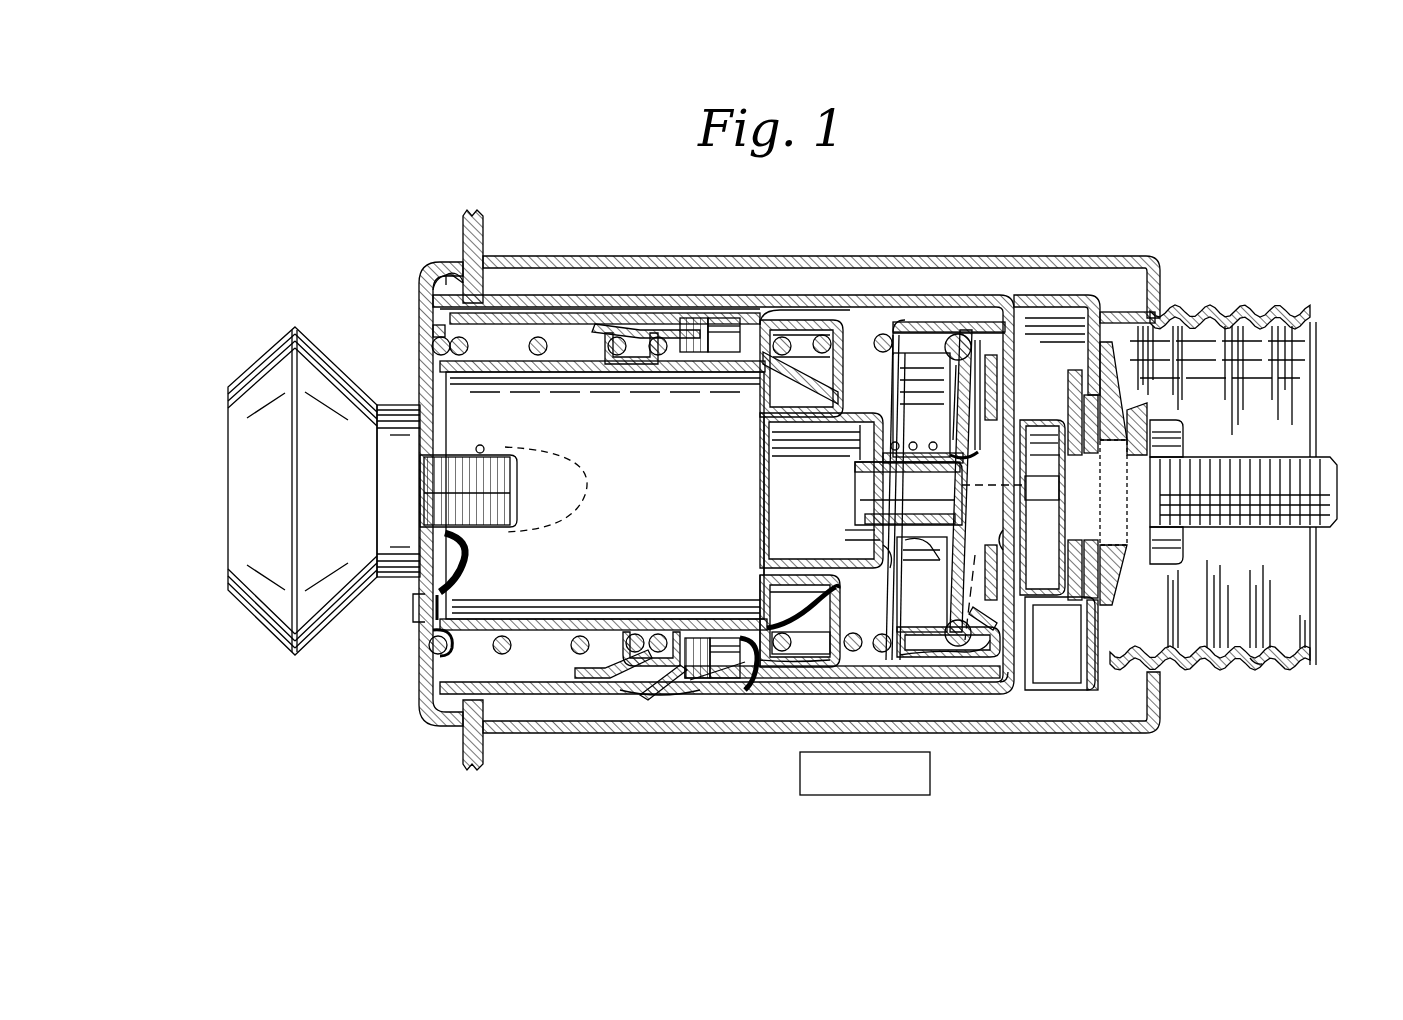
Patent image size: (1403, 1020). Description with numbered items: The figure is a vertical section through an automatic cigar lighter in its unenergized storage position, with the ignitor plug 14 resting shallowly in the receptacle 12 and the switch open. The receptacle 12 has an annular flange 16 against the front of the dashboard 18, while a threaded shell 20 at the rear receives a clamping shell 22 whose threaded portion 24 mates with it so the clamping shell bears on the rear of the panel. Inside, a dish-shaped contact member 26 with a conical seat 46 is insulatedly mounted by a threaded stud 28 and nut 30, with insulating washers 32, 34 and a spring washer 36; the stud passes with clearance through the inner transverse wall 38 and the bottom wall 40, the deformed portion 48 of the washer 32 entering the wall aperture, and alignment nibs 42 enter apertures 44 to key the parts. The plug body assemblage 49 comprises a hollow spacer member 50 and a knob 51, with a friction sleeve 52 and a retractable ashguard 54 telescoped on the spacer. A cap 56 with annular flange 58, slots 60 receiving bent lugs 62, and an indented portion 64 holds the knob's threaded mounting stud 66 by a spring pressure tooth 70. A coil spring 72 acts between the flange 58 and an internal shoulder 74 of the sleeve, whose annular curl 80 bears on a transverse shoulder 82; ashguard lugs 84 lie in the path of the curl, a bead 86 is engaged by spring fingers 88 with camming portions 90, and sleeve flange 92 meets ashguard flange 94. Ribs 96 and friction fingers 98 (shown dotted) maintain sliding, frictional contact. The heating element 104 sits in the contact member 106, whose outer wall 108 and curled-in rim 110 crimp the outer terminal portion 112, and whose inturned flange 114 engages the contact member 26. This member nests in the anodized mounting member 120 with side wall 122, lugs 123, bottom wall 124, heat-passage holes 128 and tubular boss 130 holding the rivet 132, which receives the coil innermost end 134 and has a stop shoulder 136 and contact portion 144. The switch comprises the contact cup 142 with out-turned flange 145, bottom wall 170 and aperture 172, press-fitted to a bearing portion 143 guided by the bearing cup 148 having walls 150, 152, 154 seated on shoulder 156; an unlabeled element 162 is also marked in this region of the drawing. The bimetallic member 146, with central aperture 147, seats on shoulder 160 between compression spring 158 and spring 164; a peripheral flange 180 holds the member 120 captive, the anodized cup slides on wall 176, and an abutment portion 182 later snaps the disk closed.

The receptacle 12 is at (660, 290).
The ignitor plug 14 is at (268, 322).
The annular flange 16 is at (456, 268).
The automobile dashboard 18 is at (480, 238).
The threaded shell 20 is at (1218, 672).
The clamping shell 22 is at (735, 268).
The threaded portion 24 is at (1256, 672).
The contact member 26 is at (1075, 602).
The threaded stud 28 is at (1318, 458).
The nut 30 is at (1170, 436).
The insulating washer 32 is at (1057, 644).
The insulating washer 34 is at (1150, 412).
The spring washer 36 is at (1115, 312).
The inner transverse wall 38 is at (1087, 650).
The bottom wall 40 is at (1115, 575).
The alignment nibs 42 is at (1080, 380).
The apertures 44 is at (1080, 368).
The conical seat 46 is at (1068, 447).
The deformed portion 48 is at (1054, 560).
The plug body assemblage 49 is at (408, 650).
The spacer member 50 is at (545, 619).
The knob 51 is at (236, 463).
The friction sleeve 52 is at (575, 312).
The ashguard 54 is at (526, 296).
The cap 56 is at (440, 603).
The annular flange 58 is at (432, 329).
The slots 60 is at (430, 632).
The lugs 62 is at (412, 606).
The indented portion 64 is at (468, 548).
The threaded mounting stud 66 is at (497, 478).
The spring pressure tooth 70 is at (486, 449).
The coil spring 72 is at (572, 646).
The internal shoulder 74 is at (682, 632).
The annular curl 80 is at (765, 680).
The transverse shoulder 82 is at (758, 322).
The lugs 84 is at (620, 686).
The circumferential bead 86 is at (712, 682).
The spring fingers 88 is at (660, 690).
The camming portions 90 is at (692, 700).
The annular flange 92 is at (422, 270).
The flange 94 is at (442, 275).
The longitudinal ribs 96 is at (545, 293).
The friction fingers 98 is at (578, 520).
The heating element 104 is at (985, 600).
The coil support element and contact member 106 is at (990, 300).
The outer wall 108 is at (1000, 675).
The curled-in rim 110 is at (910, 675).
The outer terminal portion 112 is at (960, 670).
The inturned flange 114 is at (1042, 488).
The mounting member 120 is at (956, 585).
The annular side wall 122 is at (963, 332).
The lugs 123 is at (1016, 300).
The bottom wall 124 is at (1000, 410).
The heat-passage holes 128 is at (922, 584).
The tubular boss 130 is at (965, 455).
The rivet 132 is at (908, 493).
The innermost end 134 is at (990, 482).
The stop shoulder 136 is at (993, 543).
The contact cup 142 is at (860, 526).
The bearing portion 143 is at (751, 480).
The contact portion 144 is at (862, 484).
The out-turned flange 145 is at (945, 556).
The bimetallic member 146 is at (862, 330).
The central aperture 147 is at (880, 545).
The bearing cup 148 is at (757, 578).
The outer annular wall 150 is at (790, 300).
The inner annular wall 152 is at (815, 585).
The conical wall 154 is at (780, 640).
The internal shoulder 156 is at (768, 628).
The compression coil spring 158 is at (892, 300).
The annular shoulder 160 is at (920, 300).
The cup 162 is at (758, 447).
The spring 164 is at (915, 442).
The bottom wall 170 is at (857, 510).
The aperture 172 is at (852, 495).
The wall 176 is at (850, 680).
The peripheral flange 180 is at (1028, 692).
The abutment portion 182 is at (838, 395).